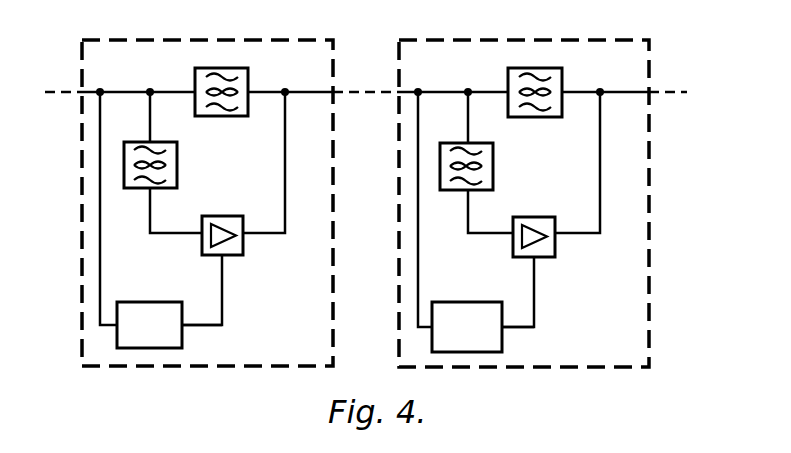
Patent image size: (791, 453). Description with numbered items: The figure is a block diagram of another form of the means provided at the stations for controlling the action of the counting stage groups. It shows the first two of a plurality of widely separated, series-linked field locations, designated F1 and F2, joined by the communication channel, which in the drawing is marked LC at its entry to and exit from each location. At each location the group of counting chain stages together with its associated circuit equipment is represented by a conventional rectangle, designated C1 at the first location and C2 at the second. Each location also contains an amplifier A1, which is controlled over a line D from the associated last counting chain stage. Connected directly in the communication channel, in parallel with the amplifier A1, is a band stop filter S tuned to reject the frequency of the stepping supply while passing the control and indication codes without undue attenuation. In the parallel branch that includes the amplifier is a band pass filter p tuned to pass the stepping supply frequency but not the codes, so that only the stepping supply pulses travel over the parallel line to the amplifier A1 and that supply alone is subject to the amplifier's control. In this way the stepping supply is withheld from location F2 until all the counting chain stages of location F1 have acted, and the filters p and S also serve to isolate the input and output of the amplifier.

The line circuit / transmission line LC is at (364, 81).
The band stop filter S is at (378, 80).
The band pass filter p is at (319, 166).
The amplifier A1 is at (378, 224).
The line D is at (358, 312).
The group of counting chain stages C1 is at (149, 325).
The group of counting chain stages C2 is at (467, 327).
The first field location F1 is at (207, 203).
The second field location F2 is at (524, 203).